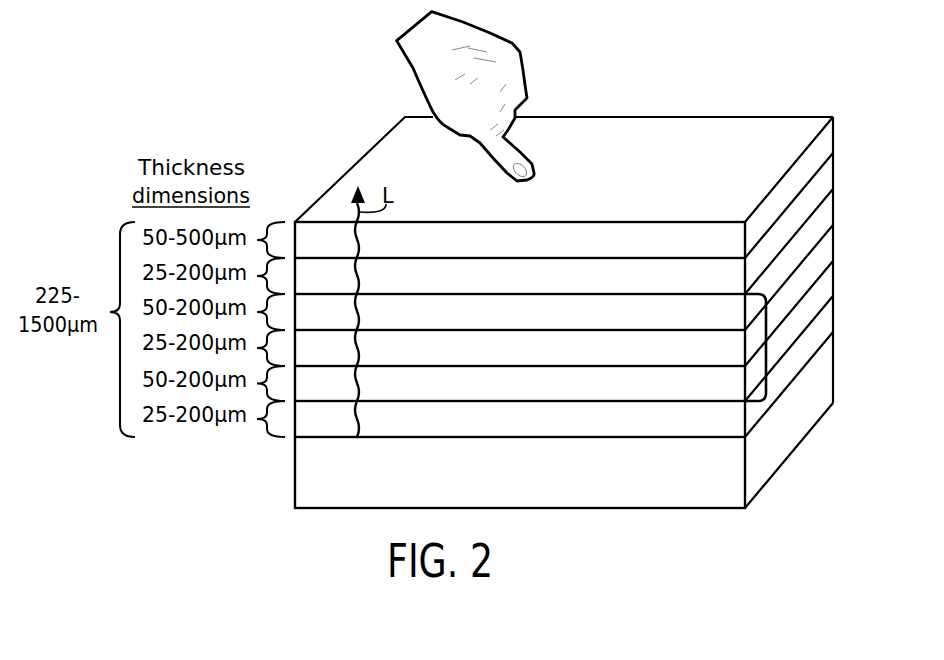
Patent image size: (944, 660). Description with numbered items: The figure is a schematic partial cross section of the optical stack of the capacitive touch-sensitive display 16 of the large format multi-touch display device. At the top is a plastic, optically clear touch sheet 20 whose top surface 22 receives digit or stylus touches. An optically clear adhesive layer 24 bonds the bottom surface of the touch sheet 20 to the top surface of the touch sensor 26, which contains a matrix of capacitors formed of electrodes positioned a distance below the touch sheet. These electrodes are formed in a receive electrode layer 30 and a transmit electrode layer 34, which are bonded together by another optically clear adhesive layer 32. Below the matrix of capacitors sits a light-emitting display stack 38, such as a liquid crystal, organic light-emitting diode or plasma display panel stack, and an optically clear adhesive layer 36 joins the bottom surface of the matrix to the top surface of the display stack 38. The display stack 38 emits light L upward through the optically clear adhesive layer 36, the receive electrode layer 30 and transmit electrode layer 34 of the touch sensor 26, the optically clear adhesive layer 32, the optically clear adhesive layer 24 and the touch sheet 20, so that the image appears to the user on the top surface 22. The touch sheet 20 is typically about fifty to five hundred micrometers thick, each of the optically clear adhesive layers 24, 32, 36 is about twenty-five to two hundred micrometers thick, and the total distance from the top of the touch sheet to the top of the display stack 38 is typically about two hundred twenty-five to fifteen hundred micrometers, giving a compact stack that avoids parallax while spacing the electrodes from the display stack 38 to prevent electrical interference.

The touch-sensitive display 16 is at (762, 75).
The touch sheet 20 is at (607, 251).
The top surface 22 is at (704, 199).
The optically clear adhesive layer 24 is at (557, 287).
The touch sensor 26 is at (766, 344).
The receive electrode layer 30 is at (547, 322).
The optically clear adhesive layer 32 is at (553, 359).
The transmit electrode layer 34 is at (546, 394).
The optically clear adhesive layer 36 is at (557, 431).
The display stack 38 is at (609, 484).